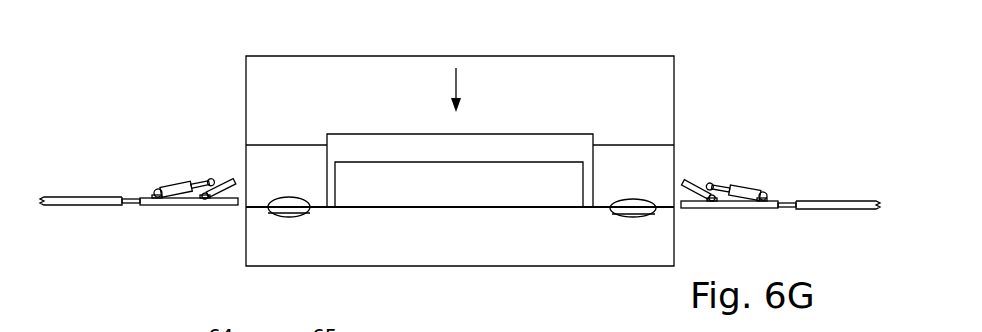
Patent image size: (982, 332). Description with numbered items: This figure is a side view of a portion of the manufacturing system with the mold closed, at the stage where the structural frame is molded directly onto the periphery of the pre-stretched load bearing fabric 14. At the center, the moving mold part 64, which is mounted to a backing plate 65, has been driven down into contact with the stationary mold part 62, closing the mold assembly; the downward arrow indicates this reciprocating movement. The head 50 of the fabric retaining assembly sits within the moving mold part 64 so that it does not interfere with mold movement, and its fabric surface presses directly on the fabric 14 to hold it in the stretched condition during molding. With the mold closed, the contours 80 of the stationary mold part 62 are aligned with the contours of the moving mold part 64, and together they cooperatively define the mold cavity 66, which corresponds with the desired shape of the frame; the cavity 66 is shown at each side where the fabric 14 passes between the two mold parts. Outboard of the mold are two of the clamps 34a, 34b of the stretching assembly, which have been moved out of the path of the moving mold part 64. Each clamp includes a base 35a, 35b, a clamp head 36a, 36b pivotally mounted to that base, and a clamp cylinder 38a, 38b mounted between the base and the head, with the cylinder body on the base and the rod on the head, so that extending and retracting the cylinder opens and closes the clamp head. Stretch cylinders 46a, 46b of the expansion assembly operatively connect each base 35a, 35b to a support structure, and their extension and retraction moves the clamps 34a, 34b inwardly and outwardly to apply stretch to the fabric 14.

The load bearing fabric 14 is at (616, 206).
The clamp 34a is at (142, 194).
The clamp 34b is at (780, 167).
The base 35a is at (188, 206).
The base 35b is at (692, 209).
The clamp head 36a is at (233, 182).
The clamp head 36b is at (688, 183).
The clamp cylinder 38a is at (175, 184).
The clamp cylinder 38b is at (737, 184).
The stretch cylinder 46a is at (65, 206).
The stretch cylinder 46b is at (820, 210).
The head 50 is at (398, 161).
The stationary mold part 62 is at (405, 266).
The moving mold part 64 is at (245, 152).
The backing plate 65 is at (340, 80).
The mold cavity 66 is at (285, 210).
The contours 80 is at (270, 213).